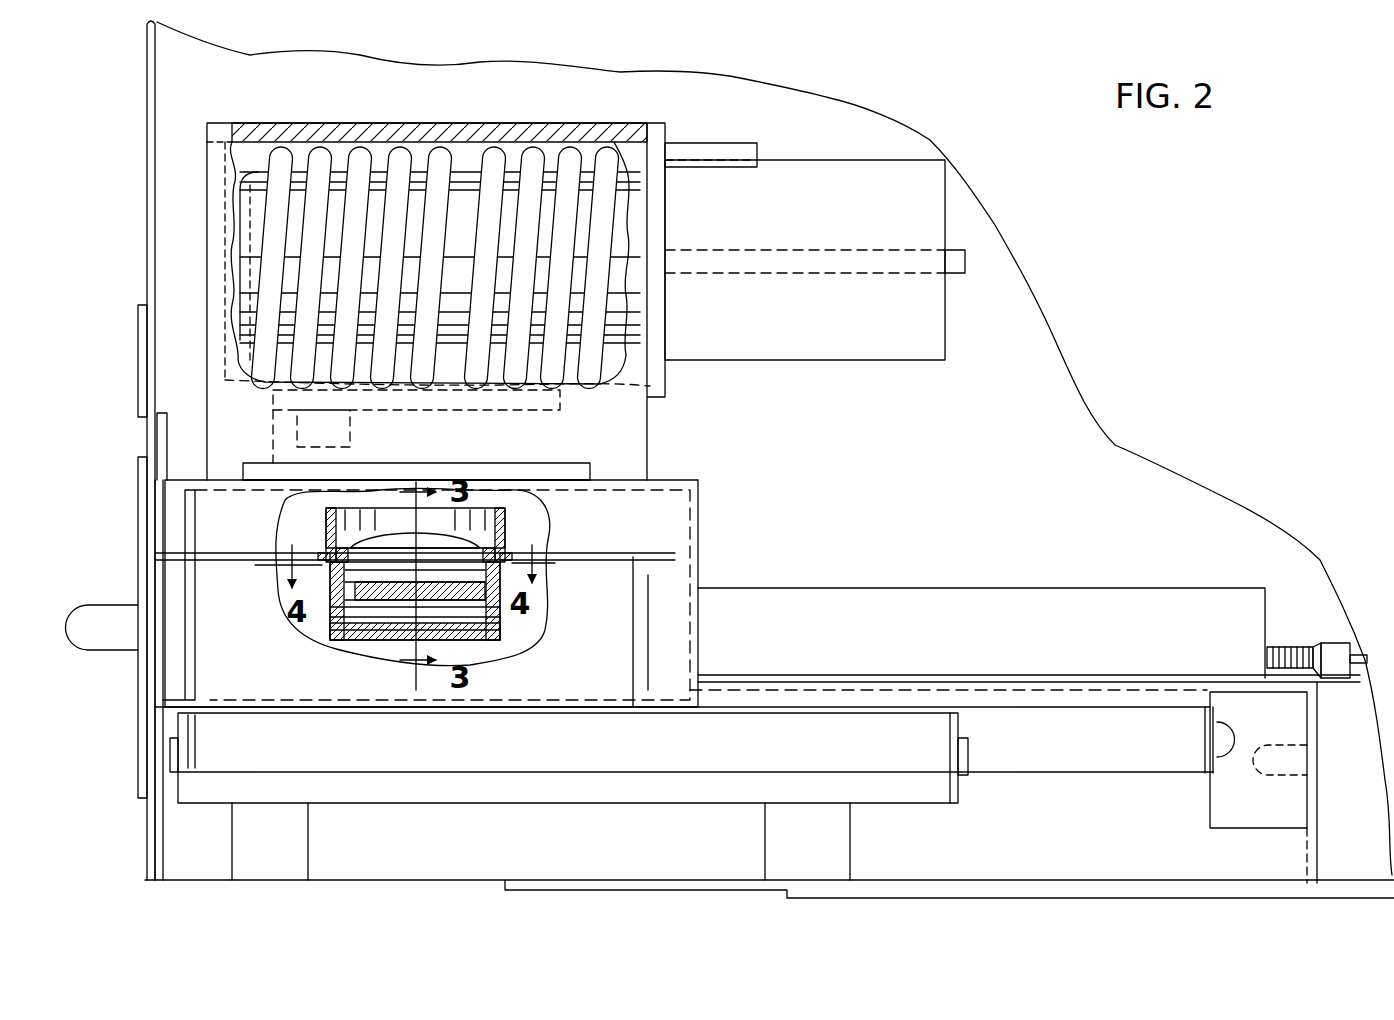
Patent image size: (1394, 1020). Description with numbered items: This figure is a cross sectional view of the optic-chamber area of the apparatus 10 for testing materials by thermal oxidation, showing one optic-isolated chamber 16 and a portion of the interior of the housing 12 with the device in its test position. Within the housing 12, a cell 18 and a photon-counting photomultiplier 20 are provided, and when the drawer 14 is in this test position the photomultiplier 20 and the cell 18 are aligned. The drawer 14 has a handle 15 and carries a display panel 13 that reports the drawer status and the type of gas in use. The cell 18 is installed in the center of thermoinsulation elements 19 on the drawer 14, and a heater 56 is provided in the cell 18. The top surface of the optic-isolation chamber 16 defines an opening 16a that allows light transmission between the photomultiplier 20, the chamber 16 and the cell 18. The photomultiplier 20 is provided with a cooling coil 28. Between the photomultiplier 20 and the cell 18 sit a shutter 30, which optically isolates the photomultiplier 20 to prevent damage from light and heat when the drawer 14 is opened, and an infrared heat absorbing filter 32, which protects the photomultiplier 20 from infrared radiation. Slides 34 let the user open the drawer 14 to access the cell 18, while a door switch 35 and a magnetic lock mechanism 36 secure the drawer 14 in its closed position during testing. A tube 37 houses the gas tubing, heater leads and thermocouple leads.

The apparatus 10 is at (144, 206).
The housing 12 is at (147, 120).
The display panel 13 is at (138, 334).
The drawer 14 is at (138, 546).
The handle 15 is at (110, 605).
The optic-isolated chamber 16 is at (665, 520).
The opening 16a is at (480, 478).
The cell 18 is at (507, 535).
The thermoinsulation elements 19 is at (213, 660).
The photon-counting photomultiplier 20 is at (472, 198).
The cooling coil 28 is at (605, 190).
The shutter 30 is at (580, 410).
The infrared heat absorbing filter 32 is at (260, 462).
The slides 34 is at (1055, 765).
The door switch 35 is at (1331, 645).
The magnetic lock mechanism 36 is at (1250, 705).
The tube 37 is at (1010, 610).
The heater 56 is at (493, 638).